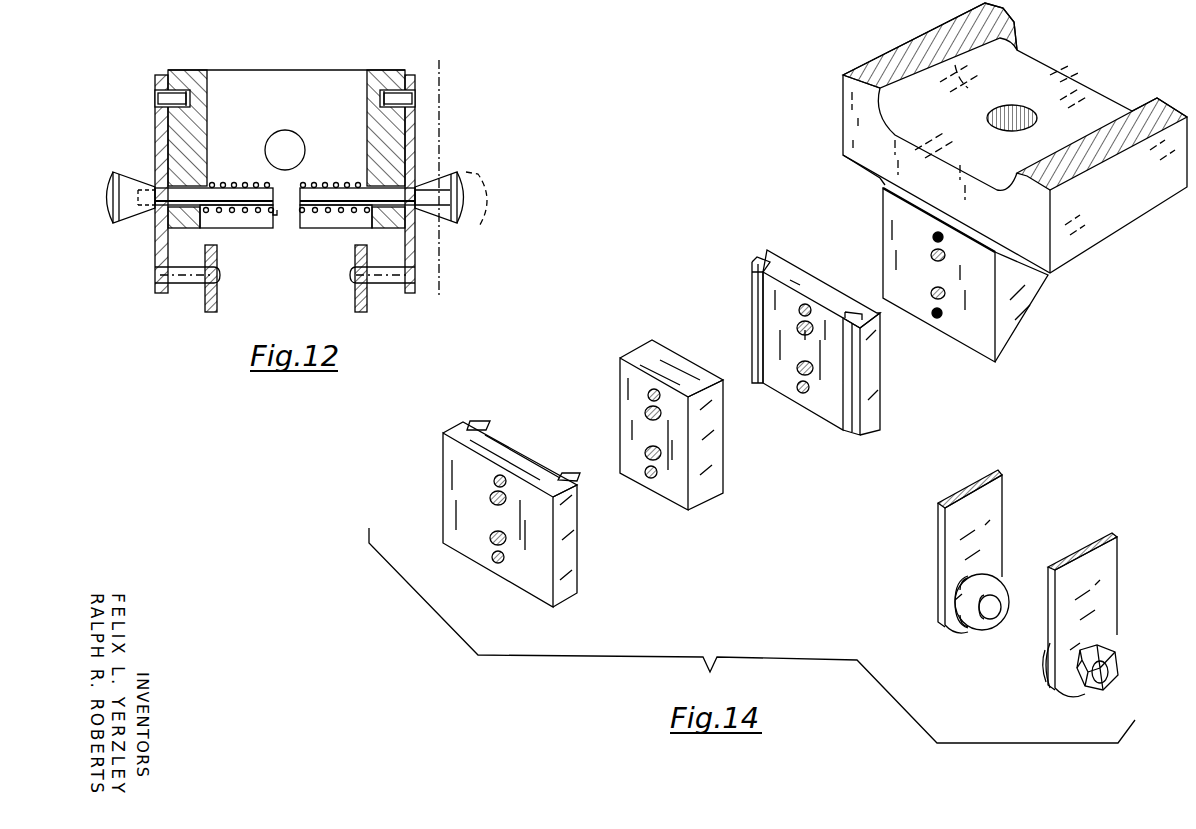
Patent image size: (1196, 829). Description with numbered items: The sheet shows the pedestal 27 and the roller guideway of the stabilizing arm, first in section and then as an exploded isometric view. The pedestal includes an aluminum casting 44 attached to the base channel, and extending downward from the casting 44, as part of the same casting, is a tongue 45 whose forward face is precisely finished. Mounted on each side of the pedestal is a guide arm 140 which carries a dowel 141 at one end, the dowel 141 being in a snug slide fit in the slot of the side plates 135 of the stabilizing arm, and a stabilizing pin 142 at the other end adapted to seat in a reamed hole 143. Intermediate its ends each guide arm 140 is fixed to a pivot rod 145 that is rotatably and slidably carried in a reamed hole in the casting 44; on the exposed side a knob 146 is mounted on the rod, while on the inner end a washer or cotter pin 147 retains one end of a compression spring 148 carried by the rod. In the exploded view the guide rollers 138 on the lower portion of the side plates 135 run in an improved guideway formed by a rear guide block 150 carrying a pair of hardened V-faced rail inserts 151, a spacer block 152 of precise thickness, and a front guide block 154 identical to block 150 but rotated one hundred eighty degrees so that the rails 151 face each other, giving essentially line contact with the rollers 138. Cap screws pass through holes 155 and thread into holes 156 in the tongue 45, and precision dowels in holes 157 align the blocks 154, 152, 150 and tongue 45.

In FIG. 14, the pedestal 27 is at (1134, 71).
In FIG. 12, the aluminum casting 44 is at (386, 73).
In FIG. 14, the aluminum casting 44 is at (1108, 238).
In FIG. 14, the tongue portion 45 is at (1035, 305).
In FIG. 12, the side plates 135 is at (218, 305).
In FIG. 14, the side plates 135 is at (998, 528).
In FIG. 14, the guide rollers 138 is at (1000, 596).
In FIG. 12, the guide arm 140 is at (158, 130).
In FIG. 12, the dowel 141 is at (189, 285).
In FIG. 12, the stabilizing pin 142 is at (180, 93).
In FIG. 12, the reamed hole 143 is at (202, 95).
In FIG. 12, the pivot rod 145 is at (246, 186).
In FIG. 12, the knob 146 is at (130, 174).
In FIG. 12, the washer or cotter pin 147 is at (298, 213).
In FIG. 12, the compression spring 148 is at (231, 216).
In FIG. 14, the rear guide block 150 is at (792, 266).
In FIG. 14, the rail inserts 151 is at (760, 262).
In FIG. 14, the spacer block 152 is at (678, 358).
In FIG. 14, the front guide block 154 is at (514, 450).
In FIG. 14, the holes 155 is at (799, 309).
In FIG. 14, the holes 156 is at (934, 236).
In FIG. 14, the holes 157 is at (934, 249).